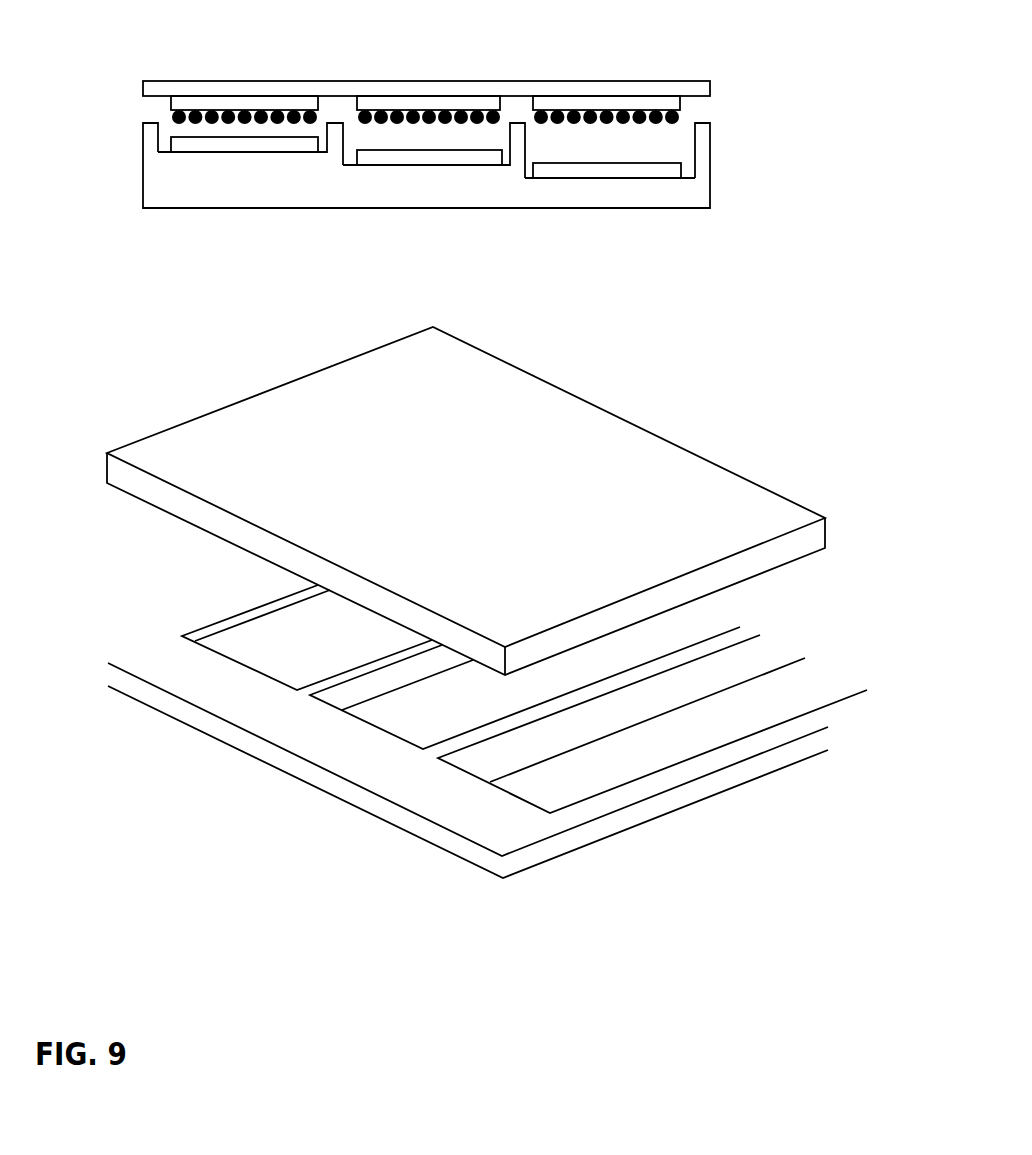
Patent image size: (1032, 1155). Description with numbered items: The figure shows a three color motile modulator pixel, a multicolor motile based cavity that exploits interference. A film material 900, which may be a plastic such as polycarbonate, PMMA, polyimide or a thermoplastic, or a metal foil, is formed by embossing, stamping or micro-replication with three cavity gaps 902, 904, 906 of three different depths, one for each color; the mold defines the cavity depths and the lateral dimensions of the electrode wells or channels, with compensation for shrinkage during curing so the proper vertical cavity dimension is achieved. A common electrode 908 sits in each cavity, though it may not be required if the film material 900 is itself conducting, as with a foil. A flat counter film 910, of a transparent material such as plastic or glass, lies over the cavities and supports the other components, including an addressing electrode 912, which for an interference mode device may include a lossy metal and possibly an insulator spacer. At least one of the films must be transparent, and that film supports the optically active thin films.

The film material 900 is at (158, 178).
The first cavity gap 902 is at (258, 193).
The second cavity gap 904 is at (443, 193).
The third cavity gap 906 is at (582, 193).
The common electrode 908 is at (282, 138).
The counter film 910 is at (710, 82).
The addressing electrode 912 is at (470, 110).